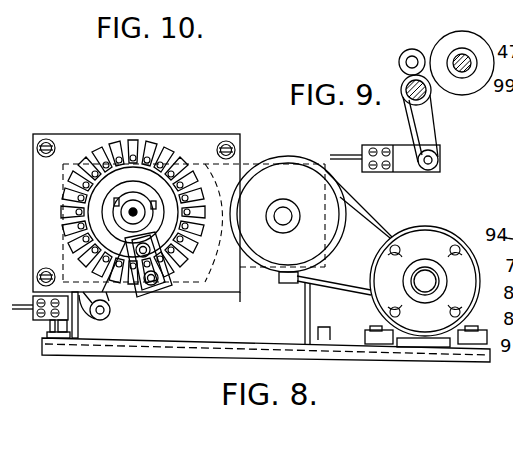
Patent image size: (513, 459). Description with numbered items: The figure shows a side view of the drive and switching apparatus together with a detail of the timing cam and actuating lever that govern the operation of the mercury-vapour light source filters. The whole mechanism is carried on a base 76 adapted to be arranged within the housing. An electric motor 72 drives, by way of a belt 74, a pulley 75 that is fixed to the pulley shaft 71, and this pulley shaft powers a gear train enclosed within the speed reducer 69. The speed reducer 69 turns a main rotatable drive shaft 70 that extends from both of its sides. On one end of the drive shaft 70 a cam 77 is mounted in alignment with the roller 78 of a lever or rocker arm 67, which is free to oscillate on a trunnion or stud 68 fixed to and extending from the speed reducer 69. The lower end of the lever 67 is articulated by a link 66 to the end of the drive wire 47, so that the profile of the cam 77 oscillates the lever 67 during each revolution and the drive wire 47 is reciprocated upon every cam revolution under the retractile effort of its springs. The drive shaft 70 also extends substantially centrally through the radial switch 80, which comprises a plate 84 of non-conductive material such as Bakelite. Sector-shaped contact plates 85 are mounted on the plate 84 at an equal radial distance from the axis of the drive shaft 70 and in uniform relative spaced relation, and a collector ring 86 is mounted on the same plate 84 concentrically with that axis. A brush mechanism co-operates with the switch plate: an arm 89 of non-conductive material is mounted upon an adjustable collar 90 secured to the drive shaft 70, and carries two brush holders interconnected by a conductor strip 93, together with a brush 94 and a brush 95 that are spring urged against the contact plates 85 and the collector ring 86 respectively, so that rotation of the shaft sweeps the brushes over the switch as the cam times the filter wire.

In FIG. 8, the drive wire 47 is at (20, 306).
In FIG. 9, the drive wire 47 is at (345, 156).
In FIG. 8, the link 66 is at (43, 322).
In FIG. 9, the link 66 is at (410, 166).
In FIG. 8, the lever or rocker arm 67 is at (108, 305).
In FIG. 9, the lever or rocker arm 67 is at (436, 146).
In FIG. 9, the trunnion or stud 68 is at (406, 98).
In FIG. 8, the speed reducer 69 is at (327, 267).
In FIG. 8, the drive shaft 70 is at (133, 212).
In FIG. 9, the drive shaft 70 is at (458, 60).
In FIG. 8, the pulley shaft 71 is at (292, 214).
In FIG. 8, the electric motor 72 is at (426, 286).
In FIG. 8, the belt 74 is at (372, 224).
In FIG. 8, the pulley 75 is at (288, 214).
In FIG. 8, the base 76 is at (270, 344).
In FIG. 9, the cam 77 is at (470, 92).
In FIG. 9, the roller 78 is at (400, 58).
In FIG. 8, the radial switch 80 is at (285, 308).
In FIG. 8, the plate 84 is at (198, 283).
In FIG. 8, the contact plates 85 is at (133, 190).
In FIG. 8, the collector ring 86 is at (117, 182).
In FIG. 8, the arm 89 is at (115, 198).
In FIG. 8, the adjustable collar 90 is at (137, 203).
In FIG. 8, the conductor strip 93 is at (170, 287).
In FIG. 8, the brush 94 is at (75, 263).
In FIG. 8, the brush 95 is at (67, 243).